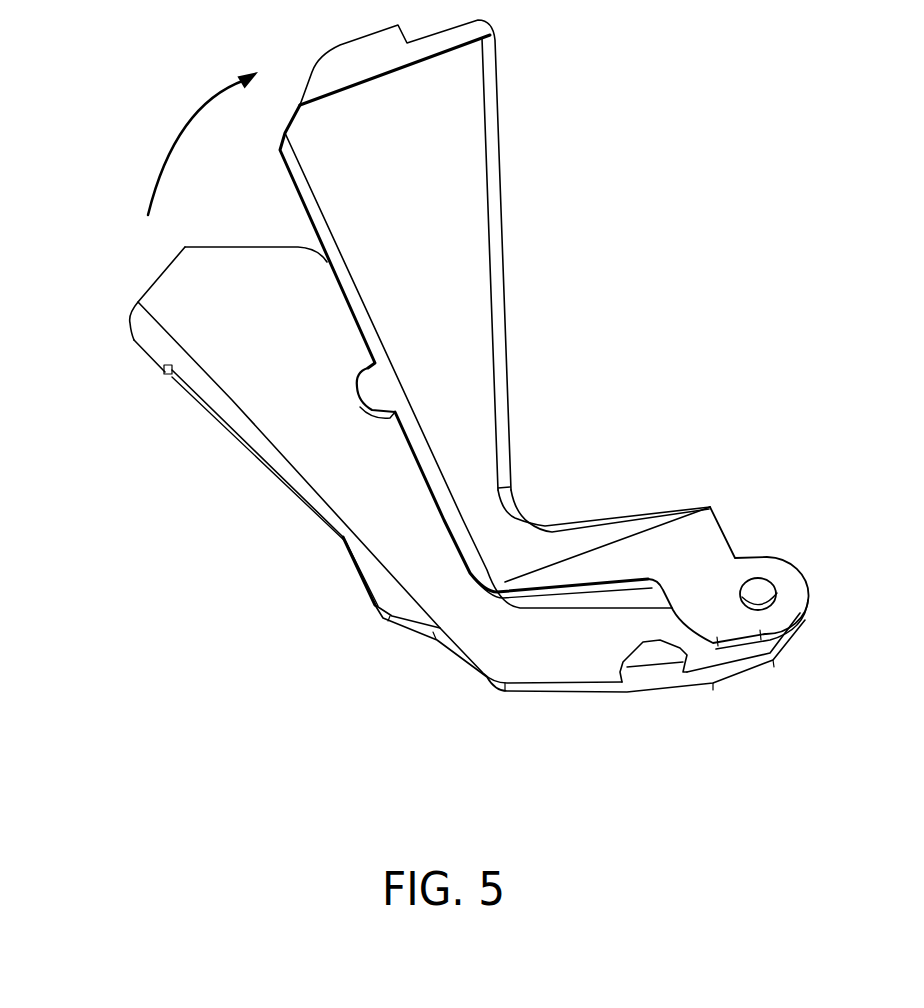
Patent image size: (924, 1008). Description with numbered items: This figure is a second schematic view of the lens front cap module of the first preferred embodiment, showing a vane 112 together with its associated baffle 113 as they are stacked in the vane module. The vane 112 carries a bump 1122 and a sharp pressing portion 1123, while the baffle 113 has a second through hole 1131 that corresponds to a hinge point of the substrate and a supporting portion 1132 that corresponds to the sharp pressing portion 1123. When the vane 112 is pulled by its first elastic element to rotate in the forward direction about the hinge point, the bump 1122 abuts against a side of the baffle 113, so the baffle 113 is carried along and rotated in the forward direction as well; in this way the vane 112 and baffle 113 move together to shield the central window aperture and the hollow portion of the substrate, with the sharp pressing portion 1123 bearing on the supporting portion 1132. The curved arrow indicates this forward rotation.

The vane 112 is at (253, 358).
The baffle 113 is at (466, 203).
The bump 1122 is at (653, 652).
The sharp pressing portion 1123 is at (393, 590).
The second through hole 1131 is at (760, 598).
The supporting portion 1132 is at (373, 395).